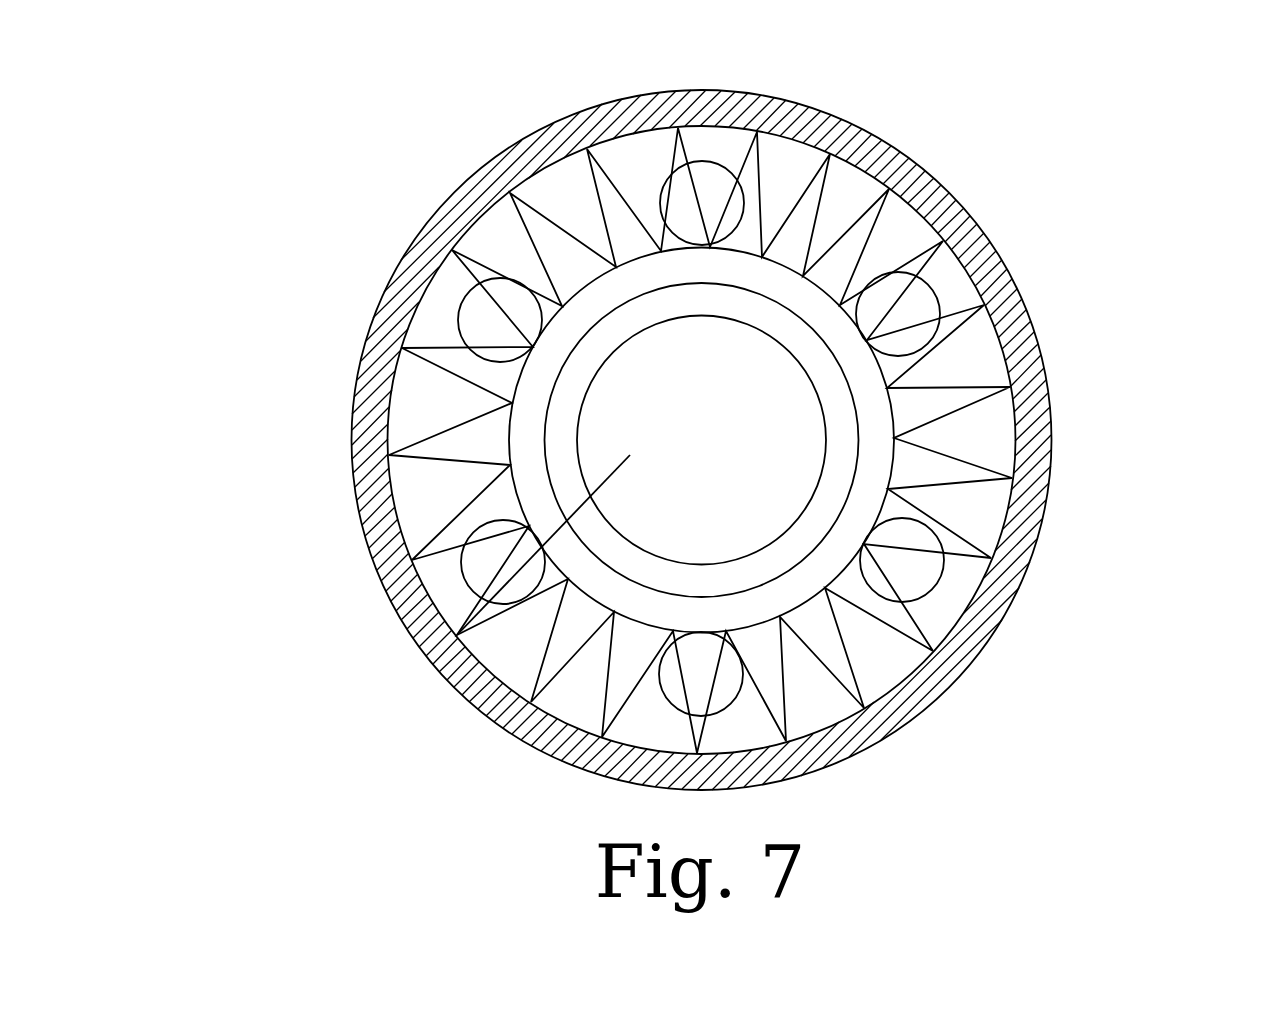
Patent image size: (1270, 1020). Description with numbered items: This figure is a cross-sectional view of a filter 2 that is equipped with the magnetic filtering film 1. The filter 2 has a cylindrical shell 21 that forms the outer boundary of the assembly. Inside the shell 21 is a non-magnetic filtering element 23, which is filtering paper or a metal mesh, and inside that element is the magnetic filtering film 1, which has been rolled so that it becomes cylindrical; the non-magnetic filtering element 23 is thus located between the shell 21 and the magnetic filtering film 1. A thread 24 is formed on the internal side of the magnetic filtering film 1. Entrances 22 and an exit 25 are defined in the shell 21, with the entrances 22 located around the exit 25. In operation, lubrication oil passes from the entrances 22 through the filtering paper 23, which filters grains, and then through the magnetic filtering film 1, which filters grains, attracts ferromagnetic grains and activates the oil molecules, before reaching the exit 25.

The magnetic filtering film 1 is at (782, 277).
The filter 2 is at (731, 419).
The shell 21 is at (1037, 550).
The entrances 22 is at (972, 595).
The non-magnetic filtering element 23 is at (423, 392).
The thread 24 is at (828, 422).
The exit 25 is at (506, 582).